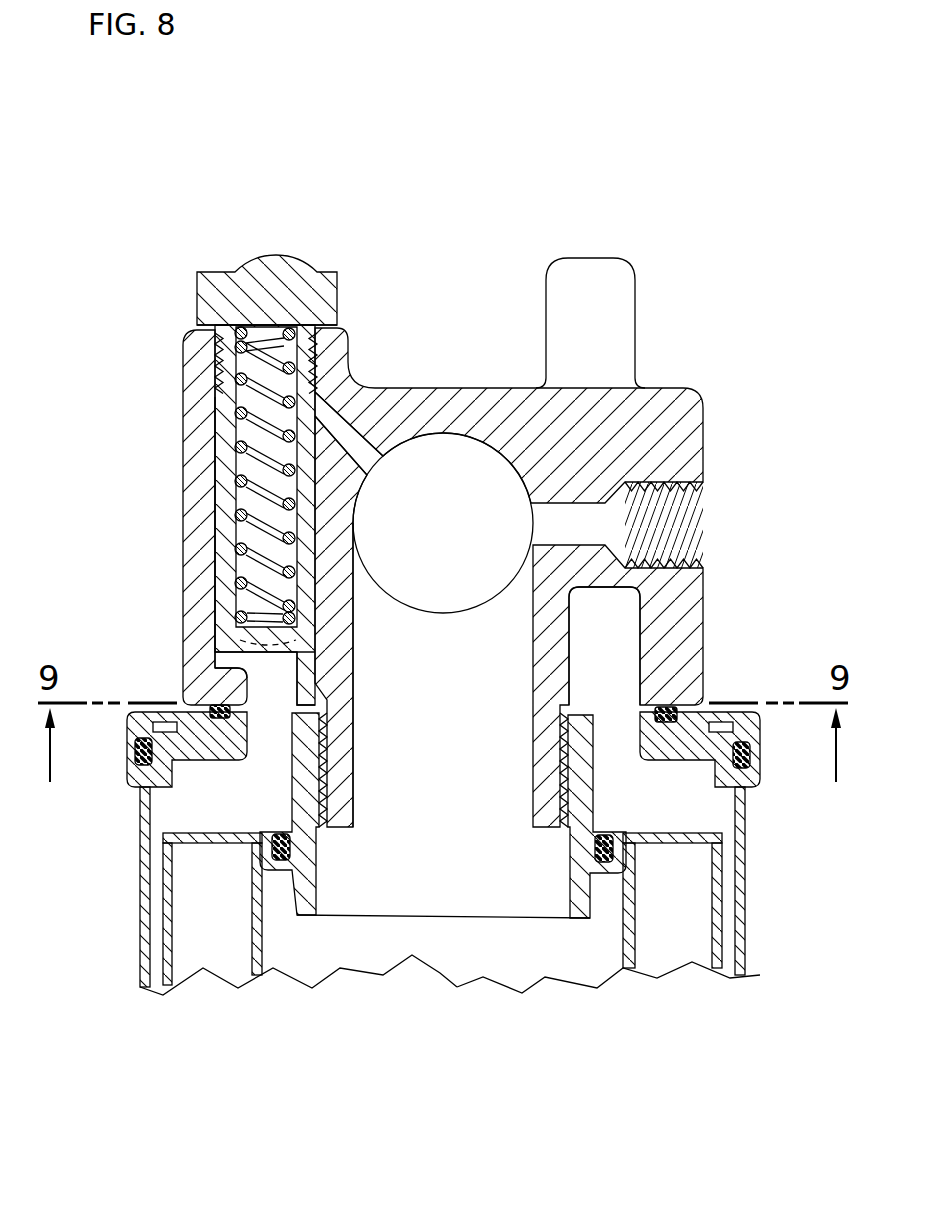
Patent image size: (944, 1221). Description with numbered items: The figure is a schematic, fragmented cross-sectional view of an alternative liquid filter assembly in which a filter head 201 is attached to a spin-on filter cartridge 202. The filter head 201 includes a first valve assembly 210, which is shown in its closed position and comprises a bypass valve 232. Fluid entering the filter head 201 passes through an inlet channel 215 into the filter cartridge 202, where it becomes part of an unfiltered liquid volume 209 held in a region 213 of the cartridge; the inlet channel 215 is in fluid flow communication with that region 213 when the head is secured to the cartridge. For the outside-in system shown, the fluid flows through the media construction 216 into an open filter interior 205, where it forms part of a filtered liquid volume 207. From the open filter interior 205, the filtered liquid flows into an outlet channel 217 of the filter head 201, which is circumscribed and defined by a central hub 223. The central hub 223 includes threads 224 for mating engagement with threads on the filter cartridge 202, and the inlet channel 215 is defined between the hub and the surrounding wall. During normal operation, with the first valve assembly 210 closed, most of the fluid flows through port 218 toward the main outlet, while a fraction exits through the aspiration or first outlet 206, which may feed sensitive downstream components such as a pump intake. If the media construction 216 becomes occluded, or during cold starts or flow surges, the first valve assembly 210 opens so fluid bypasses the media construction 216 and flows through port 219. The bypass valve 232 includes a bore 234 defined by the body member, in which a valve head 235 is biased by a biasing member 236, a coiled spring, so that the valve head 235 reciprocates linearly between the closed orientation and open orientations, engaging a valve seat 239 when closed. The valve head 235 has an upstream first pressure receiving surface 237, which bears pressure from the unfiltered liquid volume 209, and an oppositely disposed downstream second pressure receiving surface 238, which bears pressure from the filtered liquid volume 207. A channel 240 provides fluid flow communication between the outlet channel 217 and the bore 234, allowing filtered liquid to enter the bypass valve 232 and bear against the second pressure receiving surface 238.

The filter head 201 is at (148, 320).
The filter cartridge 202 is at (120, 900).
The open filter interior 205 is at (258, 960).
The first outlet 206 is at (684, 503).
The filtered liquid volume 207 is at (625, 957).
The unfiltered liquid volume 209 is at (154, 868).
The first valve assembly 210 is at (213, 610).
The region 213 is at (728, 950).
The inlet channel 215 is at (632, 612).
The media construction 216 is at (190, 958).
The outlet channel 217 is at (530, 810).
The port 218 is at (469, 607).
The port 219 is at (220, 580).
The central hub 223 is at (353, 808).
The threads 224 is at (563, 798).
The bypass valve 232 is at (222, 538).
The bore 234 is at (221, 408).
The valve head 235 is at (268, 645).
The biasing member 236 is at (260, 390).
The first pressure receiving surface 237 is at (294, 664).
The second pressure receiving surface 238 is at (240, 471).
The valve seat 239 is at (225, 656).
The channel 240 is at (357, 427).